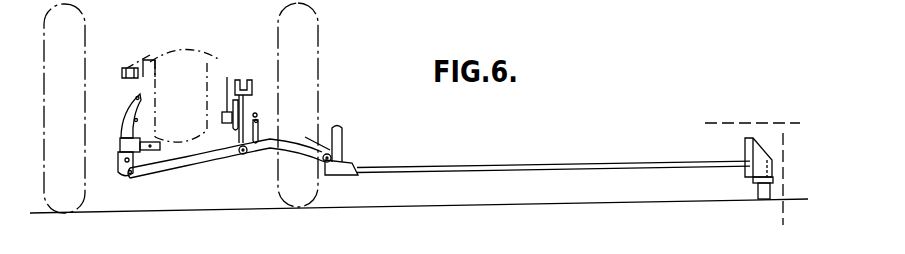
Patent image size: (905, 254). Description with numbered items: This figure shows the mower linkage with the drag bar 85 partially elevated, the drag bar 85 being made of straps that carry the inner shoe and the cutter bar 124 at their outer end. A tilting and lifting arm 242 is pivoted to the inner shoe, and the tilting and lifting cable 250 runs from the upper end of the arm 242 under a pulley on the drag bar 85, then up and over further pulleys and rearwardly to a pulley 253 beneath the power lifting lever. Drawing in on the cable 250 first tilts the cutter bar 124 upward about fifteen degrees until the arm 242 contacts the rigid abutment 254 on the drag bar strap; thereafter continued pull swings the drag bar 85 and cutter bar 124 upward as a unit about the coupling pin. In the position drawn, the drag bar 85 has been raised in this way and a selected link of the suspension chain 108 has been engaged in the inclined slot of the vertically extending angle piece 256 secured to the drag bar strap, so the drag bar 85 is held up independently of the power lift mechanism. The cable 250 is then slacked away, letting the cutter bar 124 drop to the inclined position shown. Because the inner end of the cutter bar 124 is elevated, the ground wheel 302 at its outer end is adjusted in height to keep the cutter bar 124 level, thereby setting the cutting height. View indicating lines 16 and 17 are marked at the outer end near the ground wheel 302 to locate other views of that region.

The section line 16- 16 is at (718, 118).
The section line 17- 17 is at (800, 140).
The drag bar 85 is at (223, 163).
The suspension chain 108 is at (265, 108).
The cutter bar 124 is at (523, 172).
The tilting and lifting arm 242 is at (343, 152).
The tilting and lifting cable 250 is at (268, 90).
The pulley 253 is at (270, 118).
The rigid abutment 254 is at (323, 138).
The angle piece 256 is at (262, 132).
The ground wheel 302 is at (758, 195).